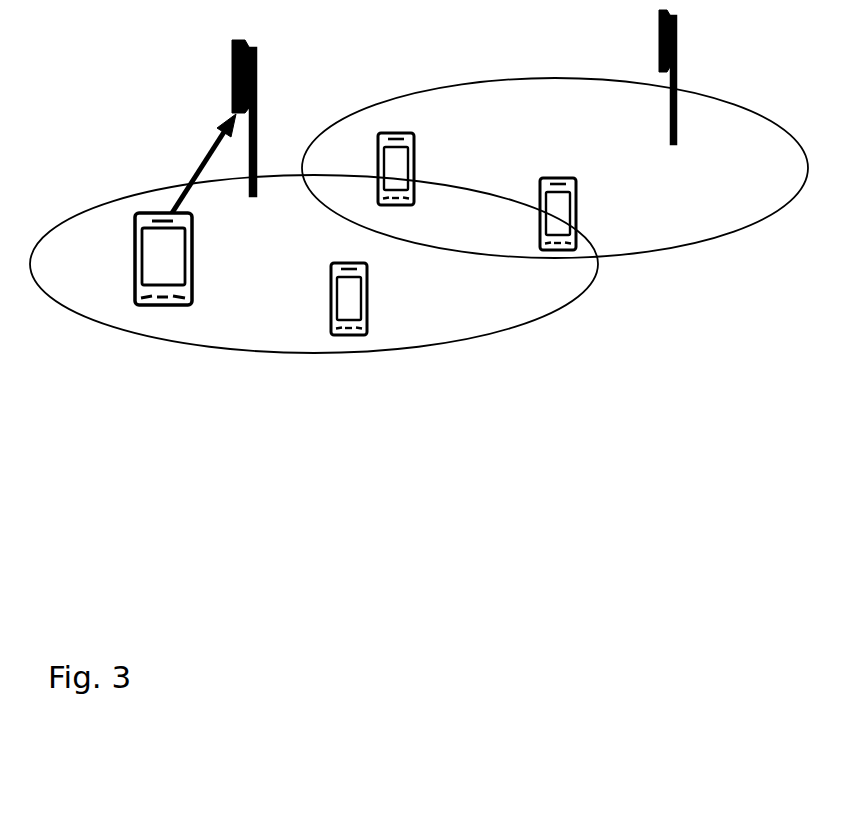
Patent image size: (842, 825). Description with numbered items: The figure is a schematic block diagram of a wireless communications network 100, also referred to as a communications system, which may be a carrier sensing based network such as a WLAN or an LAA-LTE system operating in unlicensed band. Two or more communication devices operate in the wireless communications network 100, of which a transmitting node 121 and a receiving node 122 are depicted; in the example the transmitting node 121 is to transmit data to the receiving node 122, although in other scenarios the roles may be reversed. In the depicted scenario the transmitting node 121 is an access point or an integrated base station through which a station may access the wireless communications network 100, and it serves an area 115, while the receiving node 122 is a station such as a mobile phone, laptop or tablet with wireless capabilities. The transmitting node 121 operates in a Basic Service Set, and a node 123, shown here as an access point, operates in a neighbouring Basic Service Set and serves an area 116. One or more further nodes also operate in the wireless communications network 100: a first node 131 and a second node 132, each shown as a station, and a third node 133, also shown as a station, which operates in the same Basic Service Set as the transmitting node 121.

The wireless communications network 100 is at (227, 417).
The area 115 is at (160, 190).
The area 116 is at (432, 87).
The transmitting node 121 is at (135, 258).
The receiving node 122 is at (232, 60).
The node 123 is at (667, 93).
The first node 131 is at (540, 215).
The second node 132 is at (378, 168).
The third node 133 is at (331, 298).